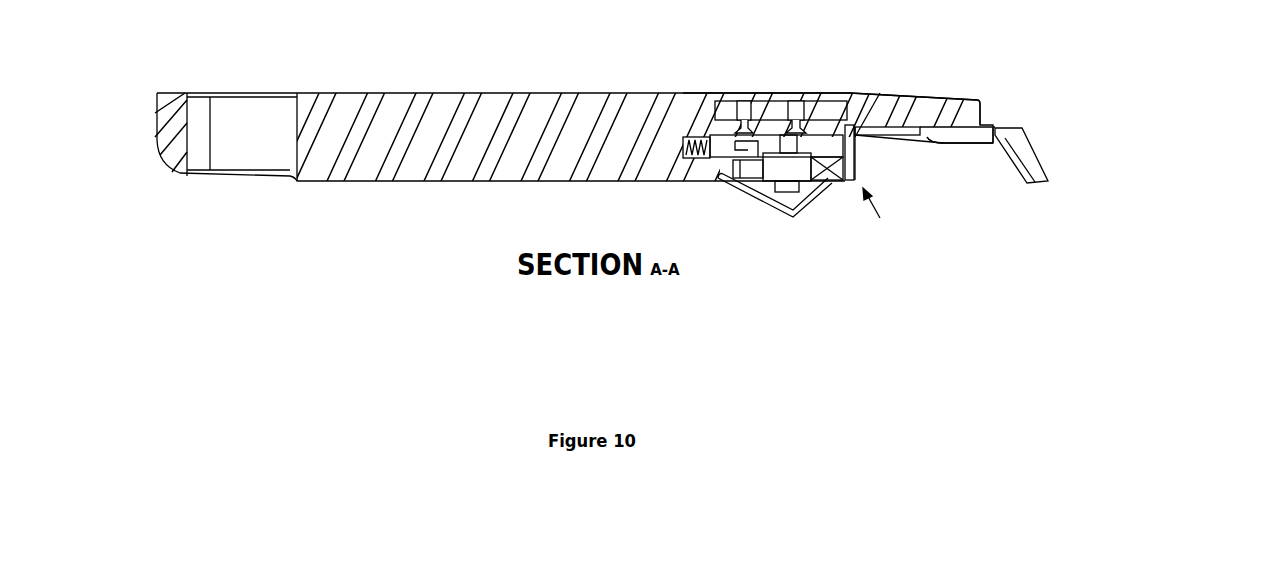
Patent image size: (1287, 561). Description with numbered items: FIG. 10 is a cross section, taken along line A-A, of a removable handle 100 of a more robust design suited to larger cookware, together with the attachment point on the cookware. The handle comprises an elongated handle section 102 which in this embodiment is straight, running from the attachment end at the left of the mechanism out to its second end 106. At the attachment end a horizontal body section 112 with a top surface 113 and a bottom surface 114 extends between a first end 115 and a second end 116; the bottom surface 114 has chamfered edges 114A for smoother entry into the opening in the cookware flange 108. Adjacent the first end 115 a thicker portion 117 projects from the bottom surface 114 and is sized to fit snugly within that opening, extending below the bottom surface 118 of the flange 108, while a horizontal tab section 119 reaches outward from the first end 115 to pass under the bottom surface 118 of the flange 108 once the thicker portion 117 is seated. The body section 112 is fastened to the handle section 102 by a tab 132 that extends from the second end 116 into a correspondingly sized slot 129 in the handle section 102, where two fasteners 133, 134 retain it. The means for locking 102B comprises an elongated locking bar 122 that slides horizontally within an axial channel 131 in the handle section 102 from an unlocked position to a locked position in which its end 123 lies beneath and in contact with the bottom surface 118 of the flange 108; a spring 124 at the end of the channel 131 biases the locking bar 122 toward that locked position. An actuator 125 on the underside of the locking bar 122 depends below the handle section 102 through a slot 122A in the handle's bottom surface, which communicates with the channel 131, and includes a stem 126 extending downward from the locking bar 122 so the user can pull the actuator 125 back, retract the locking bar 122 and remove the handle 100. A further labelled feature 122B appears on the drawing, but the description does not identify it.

The removable handle 100 is at (268, 76).
The elongated handle section 102 is at (355, 181).
The means for locking the removable handle 102B is at (867, 212).
The second end 106 is at (170, 173).
The flange 108 is at (1000, 128).
The horizontal body section 112 is at (927, 97).
The top surface 113 is at (895, 93).
The bottom surface 114 is at (927, 130).
The chamfered edges 114A is at (910, 133).
The first end 115 is at (975, 98).
The second end 116 is at (866, 100).
The thicker portion 117 is at (965, 143).
The bottom surface of the flange 118 is at (888, 135).
The horizontal tab section 119 is at (1003, 162).
The elongated locking bar 122 is at (811, 221).
The slot 122A is at (752, 188).
The clip second arm 122B is at (818, 200).
The end of the locking bar 123 is at (862, 138).
The spring 124 is at (685, 157).
The actuator 125 is at (737, 212).
The stem 126 is at (800, 203).
The slot 129 is at (705, 93).
The axial channel 131 is at (706, 158).
The tab 132 is at (775, 100).
The fastener 133 is at (745, 99).
The fastener 134 is at (798, 100).